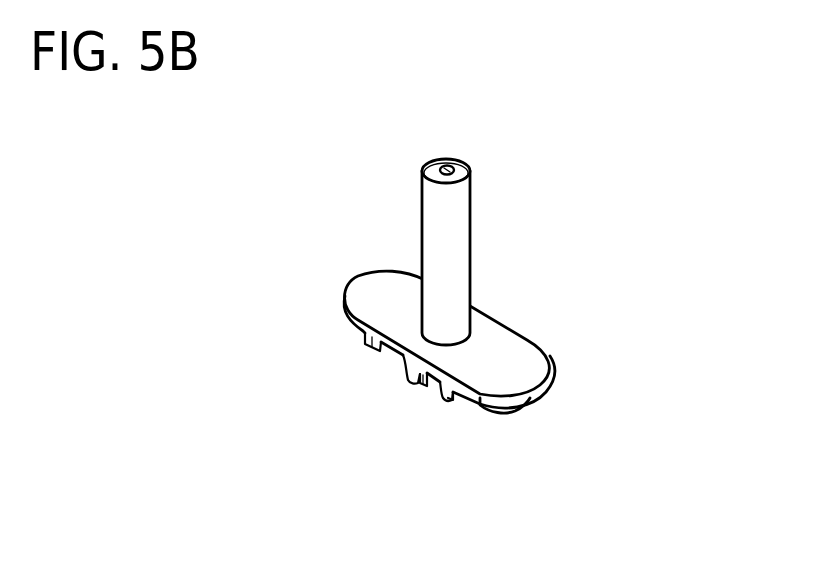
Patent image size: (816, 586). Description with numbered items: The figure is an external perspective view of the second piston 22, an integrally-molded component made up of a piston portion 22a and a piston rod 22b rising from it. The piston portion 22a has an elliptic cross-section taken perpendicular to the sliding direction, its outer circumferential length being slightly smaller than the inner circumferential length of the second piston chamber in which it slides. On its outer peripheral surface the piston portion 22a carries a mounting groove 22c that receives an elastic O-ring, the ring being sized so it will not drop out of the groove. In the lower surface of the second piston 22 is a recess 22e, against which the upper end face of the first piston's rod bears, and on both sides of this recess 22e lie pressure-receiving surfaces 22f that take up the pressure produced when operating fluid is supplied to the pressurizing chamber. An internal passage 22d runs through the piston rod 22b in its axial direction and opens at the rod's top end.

The second piston 22 is at (540, 282).
The piston portion 22a is at (378, 297).
The piston rod 22b is at (457, 222).
The mounting groove 22c is at (513, 406).
The internal passage 22d is at (445, 167).
The recess 22e is at (423, 386).
The pressure-receiving surfaces 22f is at (383, 348).